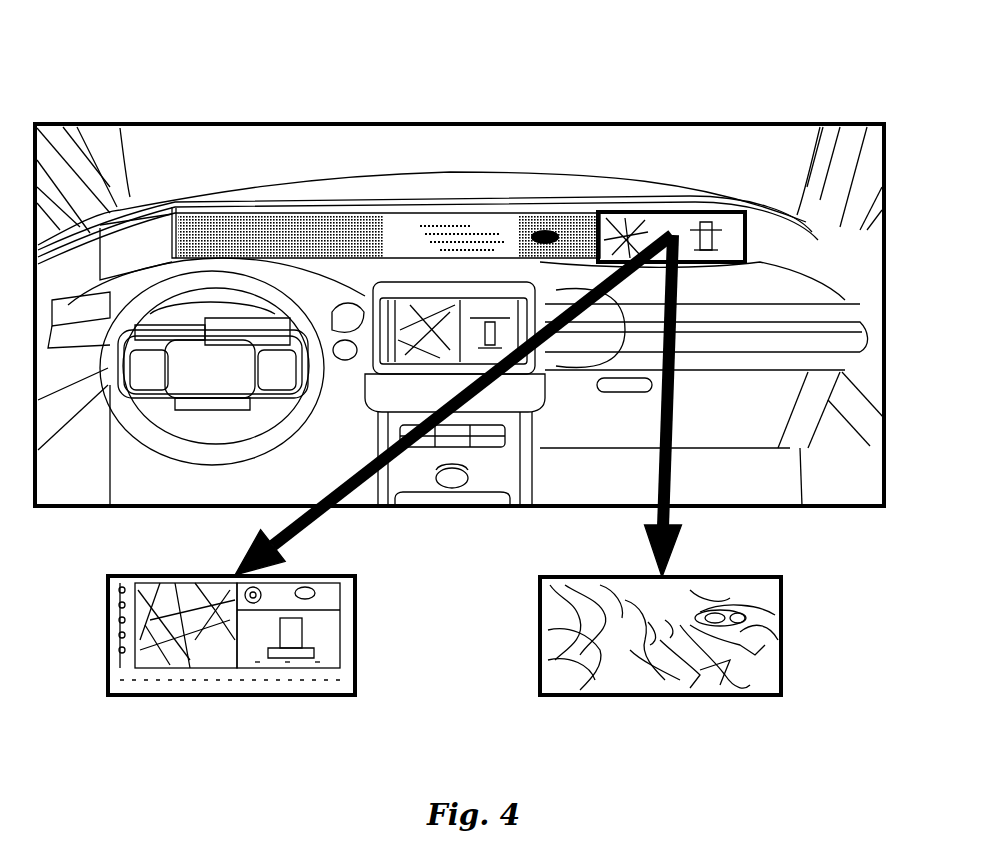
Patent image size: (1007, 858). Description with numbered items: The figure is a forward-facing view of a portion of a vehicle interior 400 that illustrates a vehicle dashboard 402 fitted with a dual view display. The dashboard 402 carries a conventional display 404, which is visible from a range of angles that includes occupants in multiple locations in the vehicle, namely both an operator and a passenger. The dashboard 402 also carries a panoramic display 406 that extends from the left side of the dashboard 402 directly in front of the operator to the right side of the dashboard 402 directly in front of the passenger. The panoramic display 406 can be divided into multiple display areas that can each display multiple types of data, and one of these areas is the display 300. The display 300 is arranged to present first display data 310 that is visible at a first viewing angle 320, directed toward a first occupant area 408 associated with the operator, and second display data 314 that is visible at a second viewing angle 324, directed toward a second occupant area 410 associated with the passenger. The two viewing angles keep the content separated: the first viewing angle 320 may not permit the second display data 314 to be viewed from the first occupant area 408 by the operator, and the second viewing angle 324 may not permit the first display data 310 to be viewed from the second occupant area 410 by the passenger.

The vehicle interior 400 is at (90, 122).
The vehicle dashboard 402 is at (229, 198).
The conventional display 404 is at (421, 305).
The panoramic display 406 is at (492, 205).
The display 300 is at (673, 211).
The first occupant area 408 is at (158, 512).
The second occupant area 410 is at (768, 512).
The first display data 310 is at (135, 692).
The second display data 314 is at (745, 695).
The first viewing angle 320 is at (316, 517).
The second viewing angle 324 is at (657, 513).